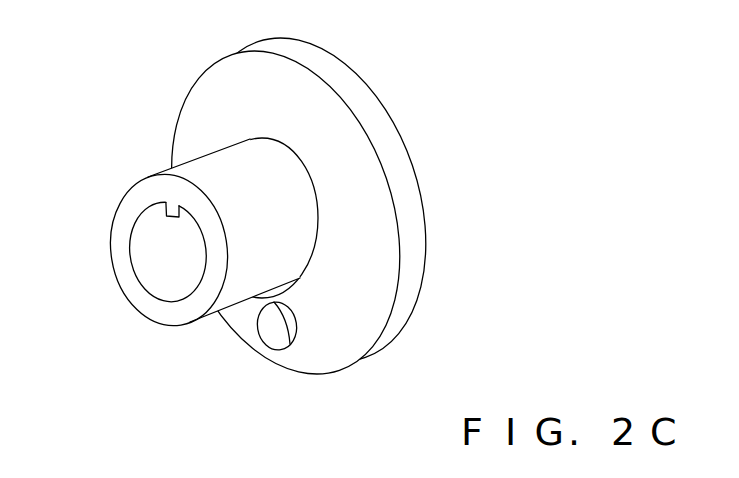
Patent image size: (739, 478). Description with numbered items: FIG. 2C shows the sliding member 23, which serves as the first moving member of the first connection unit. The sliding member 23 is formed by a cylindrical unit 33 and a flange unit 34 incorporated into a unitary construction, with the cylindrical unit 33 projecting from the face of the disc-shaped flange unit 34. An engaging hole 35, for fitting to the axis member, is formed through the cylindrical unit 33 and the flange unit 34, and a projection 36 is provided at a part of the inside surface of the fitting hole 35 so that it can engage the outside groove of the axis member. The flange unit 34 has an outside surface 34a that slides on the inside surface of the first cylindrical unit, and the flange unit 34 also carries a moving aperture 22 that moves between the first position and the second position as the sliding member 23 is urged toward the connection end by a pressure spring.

The sliding member 23 is at (271, 215).
The cylindrical unit 33 is at (205, 173).
The flange unit 34 is at (370, 218).
The outside surface 34a is at (357, 92).
The engaging hole 35 is at (172, 268).
The projection 36 is at (164, 206).
The moving aperture 22 is at (282, 328).